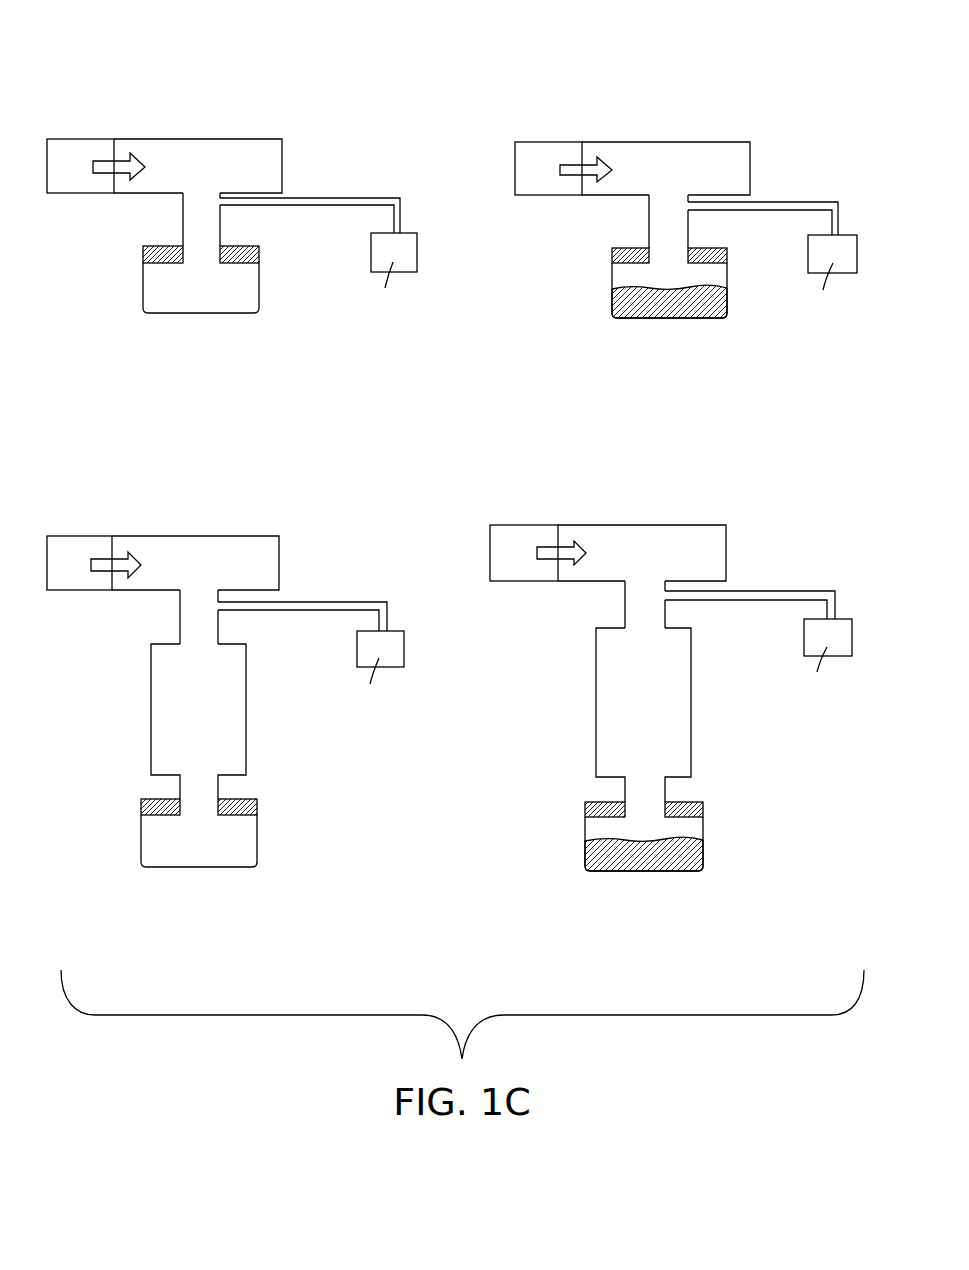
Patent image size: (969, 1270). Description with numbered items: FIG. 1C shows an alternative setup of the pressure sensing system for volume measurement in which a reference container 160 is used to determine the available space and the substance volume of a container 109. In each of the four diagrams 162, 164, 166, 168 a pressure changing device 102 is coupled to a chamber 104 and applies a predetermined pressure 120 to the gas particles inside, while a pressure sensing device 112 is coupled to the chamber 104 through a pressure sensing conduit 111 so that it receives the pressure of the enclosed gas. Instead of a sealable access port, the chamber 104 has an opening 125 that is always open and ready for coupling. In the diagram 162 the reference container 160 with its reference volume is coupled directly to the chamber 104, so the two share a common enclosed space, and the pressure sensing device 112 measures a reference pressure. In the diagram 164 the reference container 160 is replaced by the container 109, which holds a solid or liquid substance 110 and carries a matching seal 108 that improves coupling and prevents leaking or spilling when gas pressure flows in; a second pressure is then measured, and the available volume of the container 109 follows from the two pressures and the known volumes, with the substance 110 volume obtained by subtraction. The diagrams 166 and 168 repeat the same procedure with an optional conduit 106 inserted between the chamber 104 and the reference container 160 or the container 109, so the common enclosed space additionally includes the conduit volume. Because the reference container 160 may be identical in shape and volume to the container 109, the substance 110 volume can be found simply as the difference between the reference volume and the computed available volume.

The pressure changing device 102 is at (75, 138).
The chamber 104 is at (238, 138).
The predetermined pressure 120 is at (108, 173).
The opening 125 is at (213, 213).
The pressure sensing conduit 111 is at (367, 196).
The pressure sensing device 112 is at (413, 233).
The matching seal 108 is at (252, 255).
The optional conduit 106 is at (246, 703).
The reference container 160 is at (155, 315).
The container 109 is at (622, 318).
The substance 110 is at (720, 302).
The diagram 162 is at (223, 337).
The diagram 164 is at (707, 335).
The diagram 166 is at (220, 889).
The diagram 168 is at (667, 892).